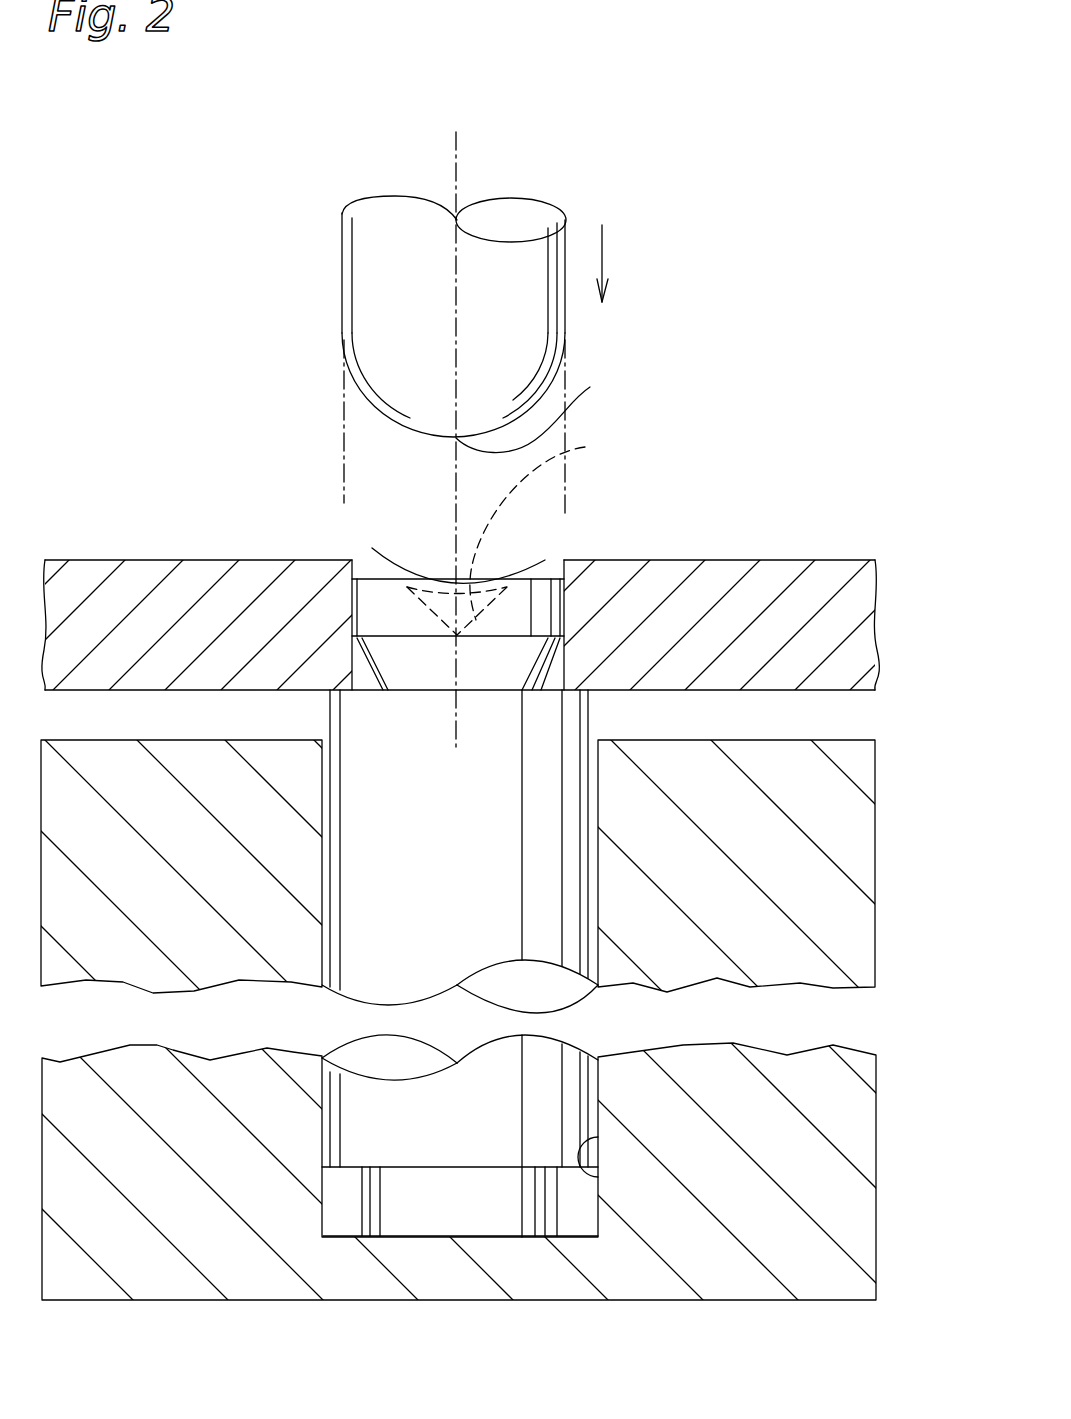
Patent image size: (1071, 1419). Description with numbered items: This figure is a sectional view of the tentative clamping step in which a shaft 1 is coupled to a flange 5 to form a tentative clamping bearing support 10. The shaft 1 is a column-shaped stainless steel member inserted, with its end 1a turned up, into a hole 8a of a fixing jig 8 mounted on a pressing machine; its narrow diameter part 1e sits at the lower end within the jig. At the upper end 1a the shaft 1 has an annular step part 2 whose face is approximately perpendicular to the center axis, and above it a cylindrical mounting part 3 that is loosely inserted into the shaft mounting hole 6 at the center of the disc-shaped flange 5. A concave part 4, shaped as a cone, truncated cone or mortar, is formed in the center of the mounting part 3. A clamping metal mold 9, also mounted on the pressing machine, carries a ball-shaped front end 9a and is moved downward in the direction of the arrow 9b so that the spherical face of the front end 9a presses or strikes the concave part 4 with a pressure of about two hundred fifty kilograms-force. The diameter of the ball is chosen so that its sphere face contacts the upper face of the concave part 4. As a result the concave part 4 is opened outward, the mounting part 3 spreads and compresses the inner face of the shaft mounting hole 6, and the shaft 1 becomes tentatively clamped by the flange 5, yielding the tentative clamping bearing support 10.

The shaft 1 is at (537, 877).
The end of the shaft 1a is at (388, 620).
The narrow diameter part 1e is at (397, 1198).
The step part 2 is at (564, 663).
The mounting part 3 is at (560, 611).
The concave part 4 is at (597, 445).
The flange 5 is at (148, 572).
The shaft mounting hole 6 is at (388, 580).
The fixing jig 8 is at (114, 768).
The hole of the fixing jig 8a is at (598, 1180).
The clamping metal mold 9 is at (377, 310).
The front end 9a is at (545, 410).
The arrow 9b is at (604, 255).
The tentative clamping bearing support 10 is at (798, 547).